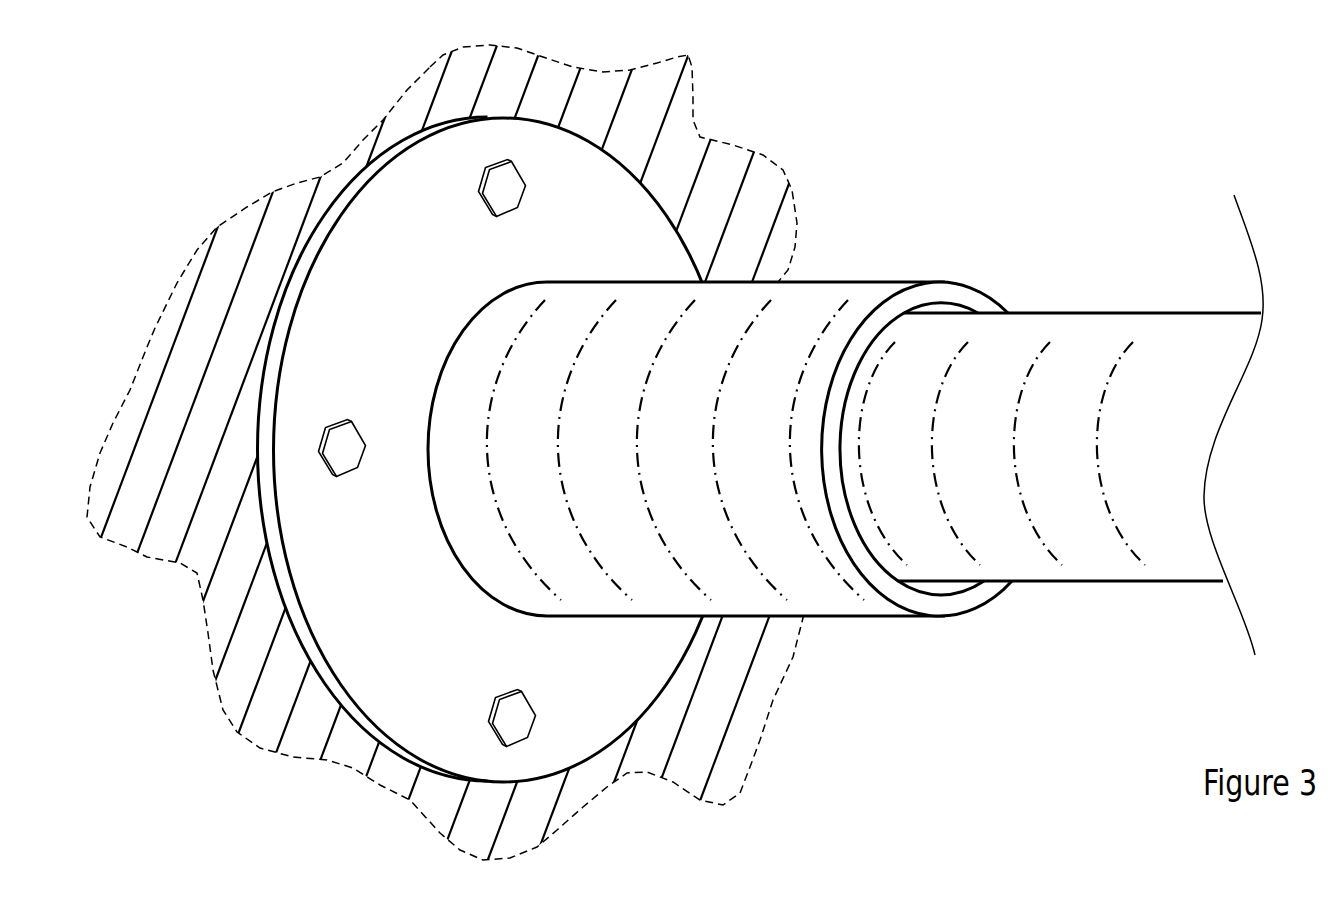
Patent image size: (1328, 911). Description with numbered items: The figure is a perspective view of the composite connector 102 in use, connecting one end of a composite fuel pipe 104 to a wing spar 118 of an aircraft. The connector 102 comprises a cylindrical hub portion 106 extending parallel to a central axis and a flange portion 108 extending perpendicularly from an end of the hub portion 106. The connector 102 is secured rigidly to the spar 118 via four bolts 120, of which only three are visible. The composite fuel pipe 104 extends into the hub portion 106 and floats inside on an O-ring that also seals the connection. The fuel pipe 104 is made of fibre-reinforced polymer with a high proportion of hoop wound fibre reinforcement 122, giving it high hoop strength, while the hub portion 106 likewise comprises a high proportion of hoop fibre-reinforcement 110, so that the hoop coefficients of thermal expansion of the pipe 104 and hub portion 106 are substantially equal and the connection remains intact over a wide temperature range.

The composite connector 102 is at (760, 489).
The composite fuel pipe 104 is at (1002, 562).
The hub portion 106 is at (830, 540).
The flange portion 108 is at (653, 667).
The hoop fibre-reinforcement 110 is at (743, 340).
The wing spar 118 is at (715, 177).
The bolts 120 is at (517, 723).
The hoop wound fibre reinforcement 122 is at (1020, 460).